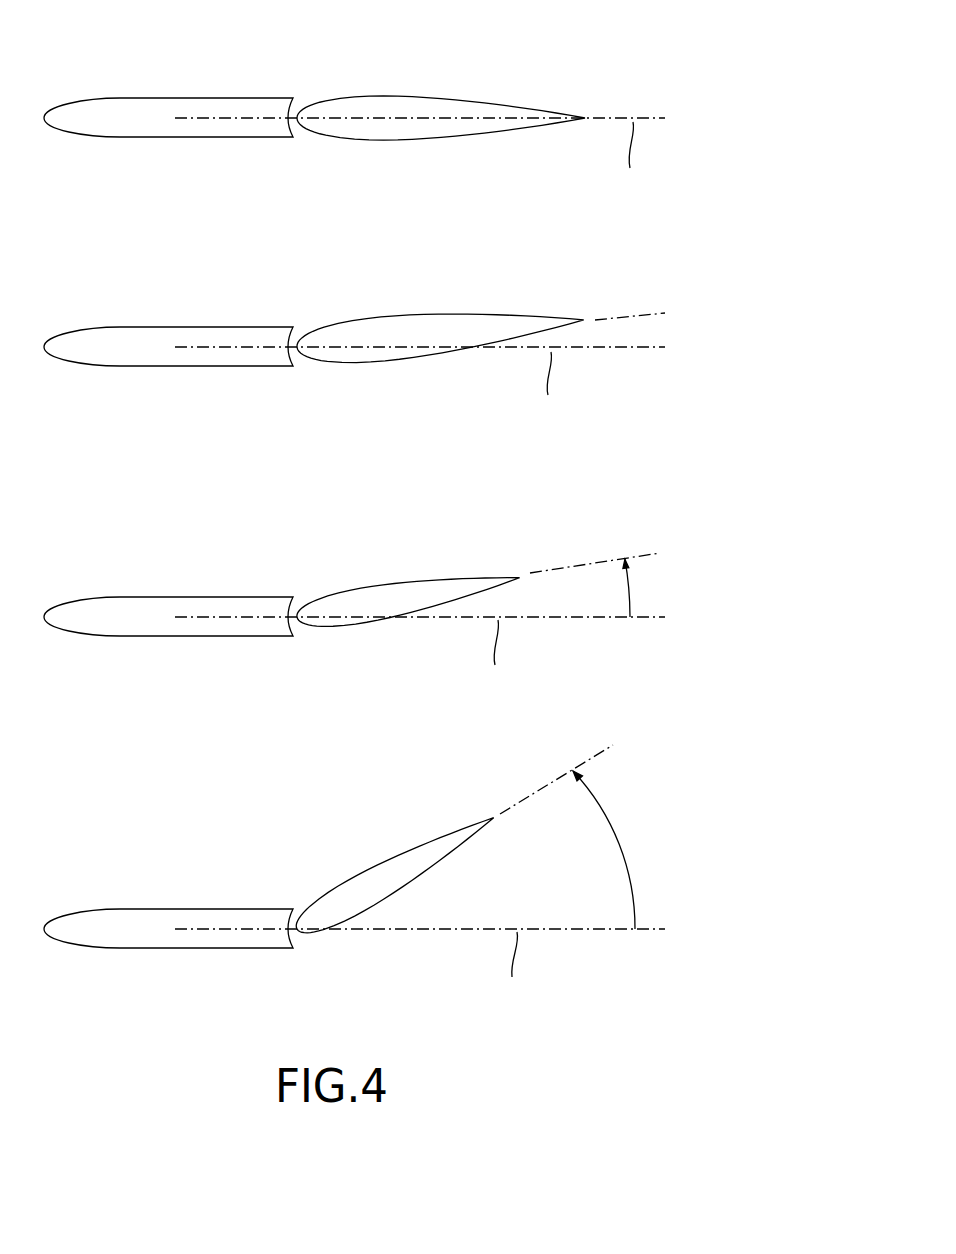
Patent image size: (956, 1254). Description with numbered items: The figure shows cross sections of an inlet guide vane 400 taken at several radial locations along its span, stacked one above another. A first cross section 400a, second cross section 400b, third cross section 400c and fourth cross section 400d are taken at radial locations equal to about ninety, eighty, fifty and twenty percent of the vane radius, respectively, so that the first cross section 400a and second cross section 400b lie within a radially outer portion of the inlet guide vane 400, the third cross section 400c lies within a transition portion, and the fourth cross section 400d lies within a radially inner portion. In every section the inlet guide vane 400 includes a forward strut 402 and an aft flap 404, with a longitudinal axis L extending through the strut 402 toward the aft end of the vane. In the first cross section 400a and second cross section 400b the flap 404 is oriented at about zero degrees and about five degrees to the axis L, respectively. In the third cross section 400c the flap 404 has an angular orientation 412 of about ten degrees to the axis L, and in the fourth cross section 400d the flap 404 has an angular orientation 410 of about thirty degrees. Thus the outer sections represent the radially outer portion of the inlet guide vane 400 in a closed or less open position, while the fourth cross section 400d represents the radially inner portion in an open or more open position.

The inlet guide vane 400 is at (175, 72).
The first cross section 400a is at (262, 75).
The second cross section 400b is at (233, 298).
The third cross section 400c is at (218, 578).
The fourth cross section 400d is at (200, 865).
The strut 402 is at (157, 138).
The flap 404 is at (467, 140).
The angular orientation 410 is at (626, 853).
The angular orientation 412 is at (628, 595).